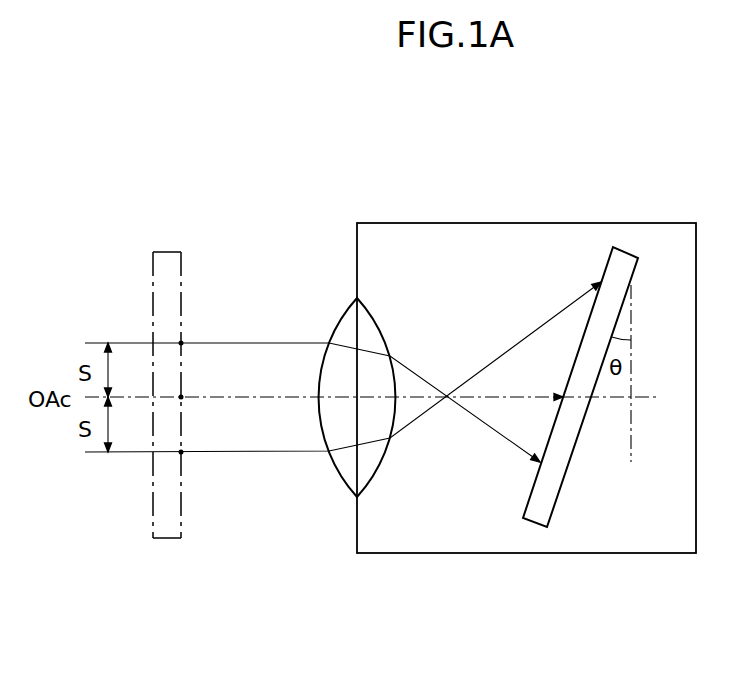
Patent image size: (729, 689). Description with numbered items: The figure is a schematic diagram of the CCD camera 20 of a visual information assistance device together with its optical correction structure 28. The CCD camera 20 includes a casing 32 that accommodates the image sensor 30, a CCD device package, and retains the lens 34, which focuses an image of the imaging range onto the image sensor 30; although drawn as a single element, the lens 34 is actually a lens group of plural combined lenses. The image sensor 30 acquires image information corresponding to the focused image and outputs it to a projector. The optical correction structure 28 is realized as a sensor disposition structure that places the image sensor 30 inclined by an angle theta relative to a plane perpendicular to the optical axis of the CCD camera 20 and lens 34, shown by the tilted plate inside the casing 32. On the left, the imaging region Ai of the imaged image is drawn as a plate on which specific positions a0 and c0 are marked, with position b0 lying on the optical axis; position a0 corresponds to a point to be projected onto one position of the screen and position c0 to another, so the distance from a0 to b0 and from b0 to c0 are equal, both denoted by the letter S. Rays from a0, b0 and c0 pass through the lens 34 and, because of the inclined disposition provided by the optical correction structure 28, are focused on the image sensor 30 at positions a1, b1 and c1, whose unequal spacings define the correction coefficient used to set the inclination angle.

The CCD camera 20 is at (602, 167).
The optical correction structure 28 is at (559, 521).
The image sensor 30 is at (562, 456).
The casing 32 is at (472, 222).
The lens 34 is at (375, 322).
The imaging region Ai is at (162, 538).
The position a0 is at (181, 343).
The position b0 is at (181, 397).
The position c0 is at (181, 452).
The focusing position a1 is at (538, 468).
The focusing position b1 is at (563, 396).
The focusing position c1 is at (601, 282).